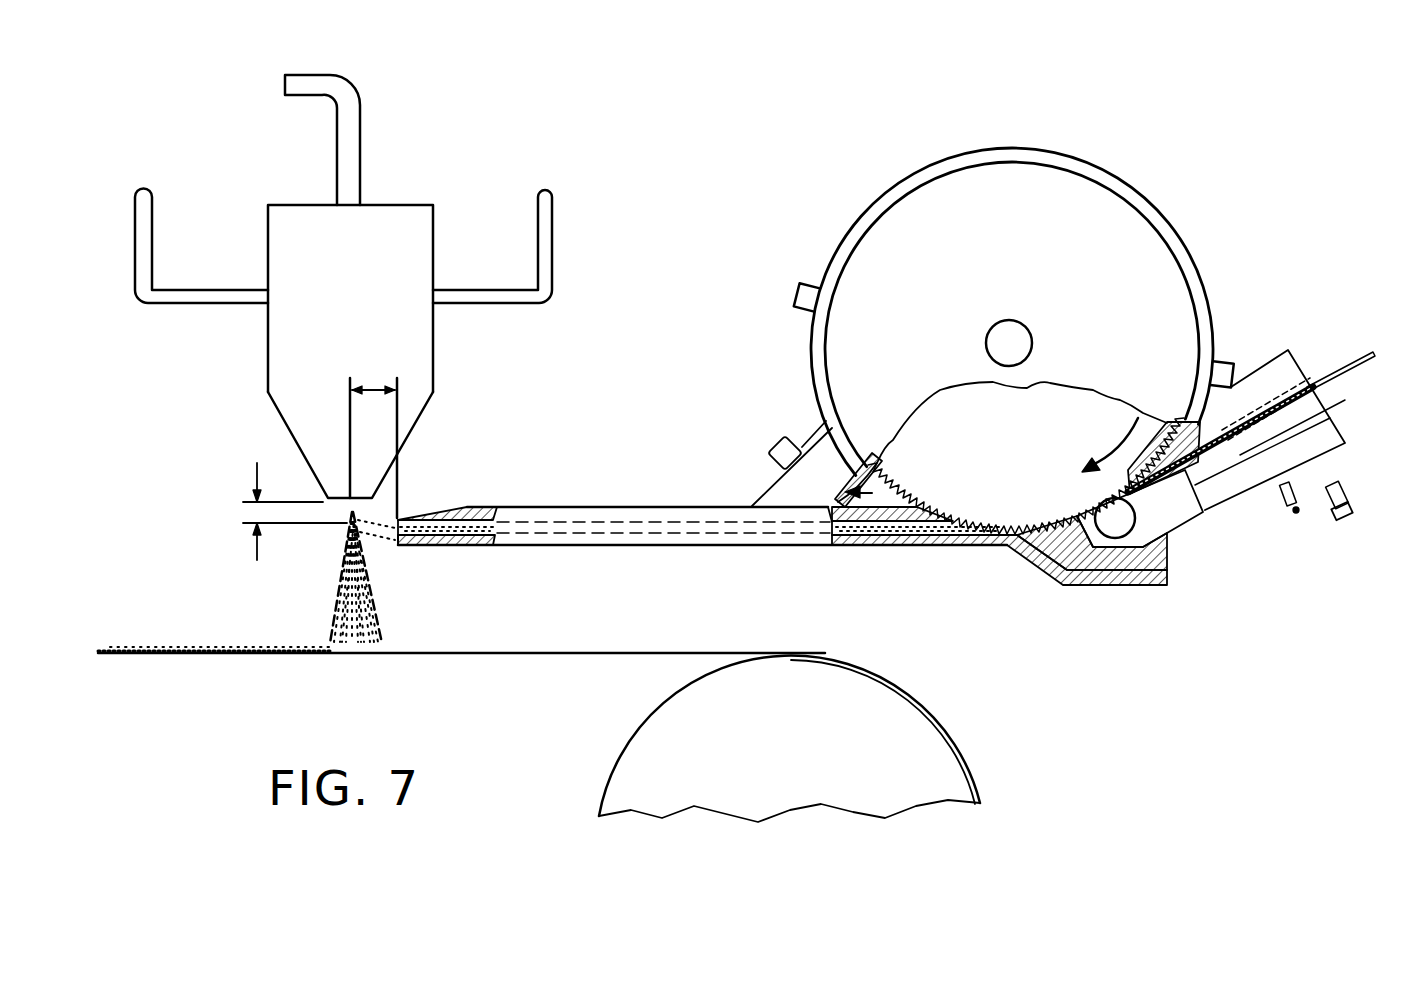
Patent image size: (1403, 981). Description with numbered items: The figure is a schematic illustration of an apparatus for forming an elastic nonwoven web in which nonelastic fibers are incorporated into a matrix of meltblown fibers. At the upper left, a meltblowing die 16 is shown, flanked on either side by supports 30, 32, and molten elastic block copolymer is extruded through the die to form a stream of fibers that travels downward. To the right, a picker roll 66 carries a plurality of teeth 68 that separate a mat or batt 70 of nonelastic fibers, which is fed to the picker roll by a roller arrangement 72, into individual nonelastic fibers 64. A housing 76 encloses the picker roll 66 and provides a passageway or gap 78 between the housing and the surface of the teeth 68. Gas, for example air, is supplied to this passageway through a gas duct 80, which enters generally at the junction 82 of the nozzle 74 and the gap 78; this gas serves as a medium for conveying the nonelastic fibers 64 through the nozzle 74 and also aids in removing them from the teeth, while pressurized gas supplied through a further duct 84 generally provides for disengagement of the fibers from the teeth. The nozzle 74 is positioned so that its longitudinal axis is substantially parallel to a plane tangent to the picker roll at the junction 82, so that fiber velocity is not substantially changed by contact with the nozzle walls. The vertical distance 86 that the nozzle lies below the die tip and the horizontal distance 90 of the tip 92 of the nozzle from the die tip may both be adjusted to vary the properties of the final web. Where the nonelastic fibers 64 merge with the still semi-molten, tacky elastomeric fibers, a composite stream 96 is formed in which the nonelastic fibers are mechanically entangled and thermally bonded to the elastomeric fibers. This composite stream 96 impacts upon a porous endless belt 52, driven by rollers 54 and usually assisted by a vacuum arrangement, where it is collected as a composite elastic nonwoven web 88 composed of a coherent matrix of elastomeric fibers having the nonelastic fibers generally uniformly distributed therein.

The meltblowing die 16 is at (377, 217).
The left support arm 30 is at (145, 196).
The right support arm 32 is at (542, 197).
The foraminous endless belt 52 is at (502, 657).
The rollers 54 is at (920, 738).
The nonelastic fibers 64 is at (377, 537).
The picker roll 66 is at (1015, 470).
The teeth 68 is at (853, 480).
The mat or batt of nonelastic fibers 70 is at (1342, 360).
The roller arrangement 72 is at (1130, 517).
The nozzle 74 is at (632, 545).
The housing 76 is at (1030, 147).
The passageway or gap 78 is at (920, 510).
The gas duct 80 is at (1168, 565).
The junction 82 is at (1007, 540).
The duct 84 is at (770, 442).
The vertical distance 86 is at (253, 513).
The composite elastic nonwoven web 88 is at (150, 651).
The horizontal distance 90 is at (373, 388).
The tip of the nozzle 92 is at (395, 530).
The composite stream 96 is at (337, 603).